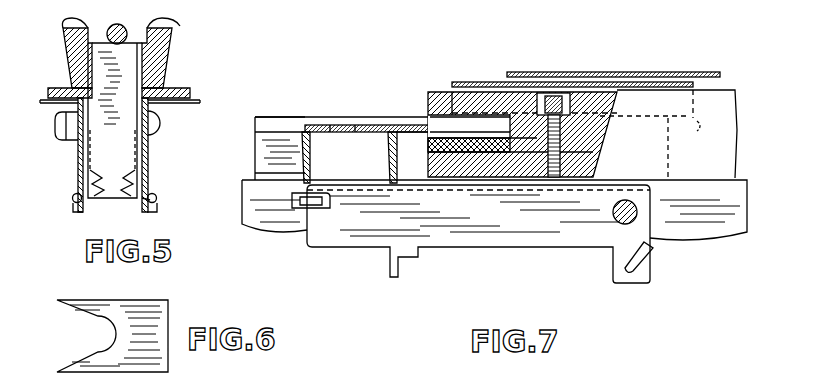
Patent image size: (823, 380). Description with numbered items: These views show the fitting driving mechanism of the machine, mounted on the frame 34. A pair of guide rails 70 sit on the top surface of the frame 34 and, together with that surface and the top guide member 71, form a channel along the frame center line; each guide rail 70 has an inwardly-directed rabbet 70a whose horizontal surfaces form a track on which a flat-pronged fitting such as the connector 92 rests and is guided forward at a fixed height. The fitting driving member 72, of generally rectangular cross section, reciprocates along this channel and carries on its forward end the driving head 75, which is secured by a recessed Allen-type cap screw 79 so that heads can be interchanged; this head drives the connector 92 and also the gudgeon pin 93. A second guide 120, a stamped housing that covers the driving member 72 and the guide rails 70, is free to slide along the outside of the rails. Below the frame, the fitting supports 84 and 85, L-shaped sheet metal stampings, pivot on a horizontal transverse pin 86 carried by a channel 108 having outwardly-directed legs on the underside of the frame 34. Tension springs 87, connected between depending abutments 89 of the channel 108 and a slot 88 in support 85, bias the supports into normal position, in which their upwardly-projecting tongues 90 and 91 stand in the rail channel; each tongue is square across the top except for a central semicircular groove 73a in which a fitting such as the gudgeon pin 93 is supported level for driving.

In FIG. 5, the frame 34 is at (192, 100).
In FIG. 7, the frame 34 is at (725, 236).
In FIG. 5, the guide rails 70 is at (84, 50).
In FIG. 7, the guide rails 70 is at (280, 135).
In FIG. 5, the rabbet 70a is at (65, 30).
In FIG. 7, the rabbet 70a is at (282, 118).
In FIG. 7, the top guide member 71 is at (534, 82).
In FIG. 7, the fitting driving member 72 is at (728, 96).
In FIG. 5, the semicircular groove 73a is at (122, 31).
In FIG. 7, the semicircular groove 73a is at (306, 131).
In FIG. 7, the driving head 75 is at (442, 92).
In FIG. 7, the cap screw 79 is at (556, 96).
In FIG. 5, the fitting support 84 is at (62, 132).
In FIG. 5, the fitting support 85 is at (150, 147).
In FIG. 7, the fitting support 85 is at (528, 243).
In FIG. 5, the pin 86 is at (162, 120).
In FIG. 7, the pin 86 is at (612, 213).
In FIG. 5, the tension springs 87 is at (72, 196).
In FIG. 5, the slot 88 is at (158, 200).
In FIG. 7, the slot 88 is at (658, 250).
In FIG. 5, the abutments 89 is at (76, 212).
In FIG. 5, the tongue 90 is at (145, 65).
In FIG. 7, the tongue 90 is at (388, 165).
In FIG. 7, the tongue 91 is at (312, 158).
In FIG. 6, the connector 92 is at (86, 299).
In FIG. 7, the connector 92 is at (364, 124).
In FIG. 5, the gudgeon pin 93 is at (100, 62).
In FIG. 7, the gudgeon pin 93 is at (474, 180).
In FIG. 5, the channel 108 is at (78, 168).
In FIG. 7, the second guide 120 is at (590, 73).